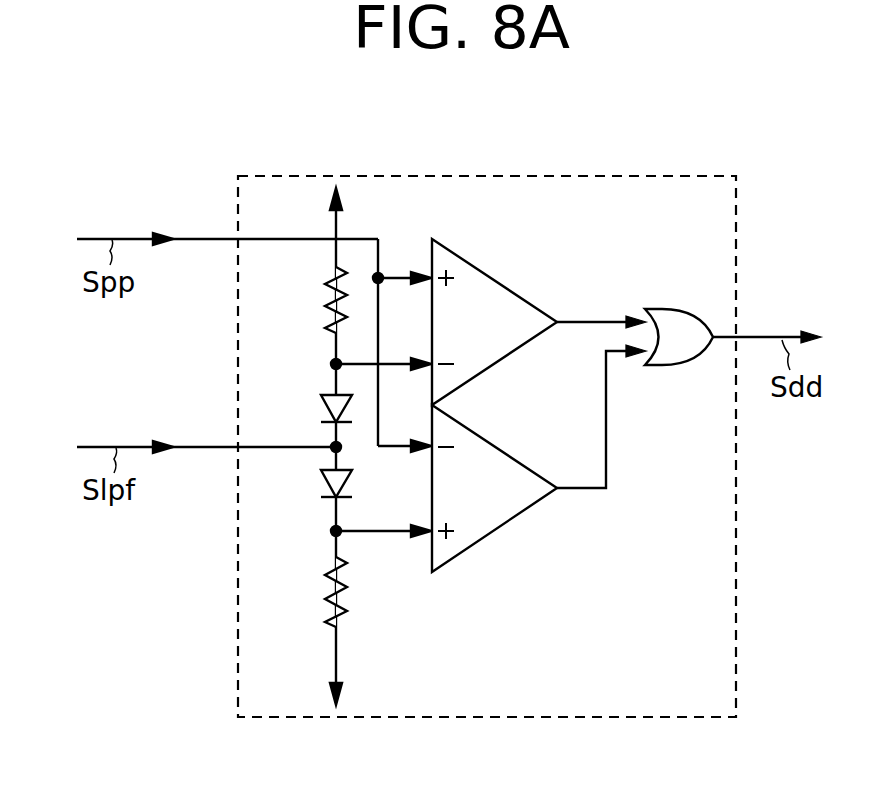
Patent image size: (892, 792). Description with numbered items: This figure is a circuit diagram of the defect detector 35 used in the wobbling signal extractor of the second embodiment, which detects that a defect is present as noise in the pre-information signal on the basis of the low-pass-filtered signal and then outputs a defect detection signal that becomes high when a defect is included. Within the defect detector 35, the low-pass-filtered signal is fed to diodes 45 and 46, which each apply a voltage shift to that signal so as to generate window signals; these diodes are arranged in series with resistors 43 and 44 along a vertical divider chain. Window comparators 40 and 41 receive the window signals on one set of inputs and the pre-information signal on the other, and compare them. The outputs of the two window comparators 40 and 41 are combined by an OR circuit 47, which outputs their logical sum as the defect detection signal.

The defect detector 35 is at (616, 176).
The window comparator 40 is at (505, 283).
The window comparator 41 is at (507, 452).
The resistor 43 is at (323, 300).
The resistor 44 is at (323, 590).
The diode 45 is at (325, 411).
The diode 46 is at (325, 485).
The OR circuit 47 is at (675, 308).